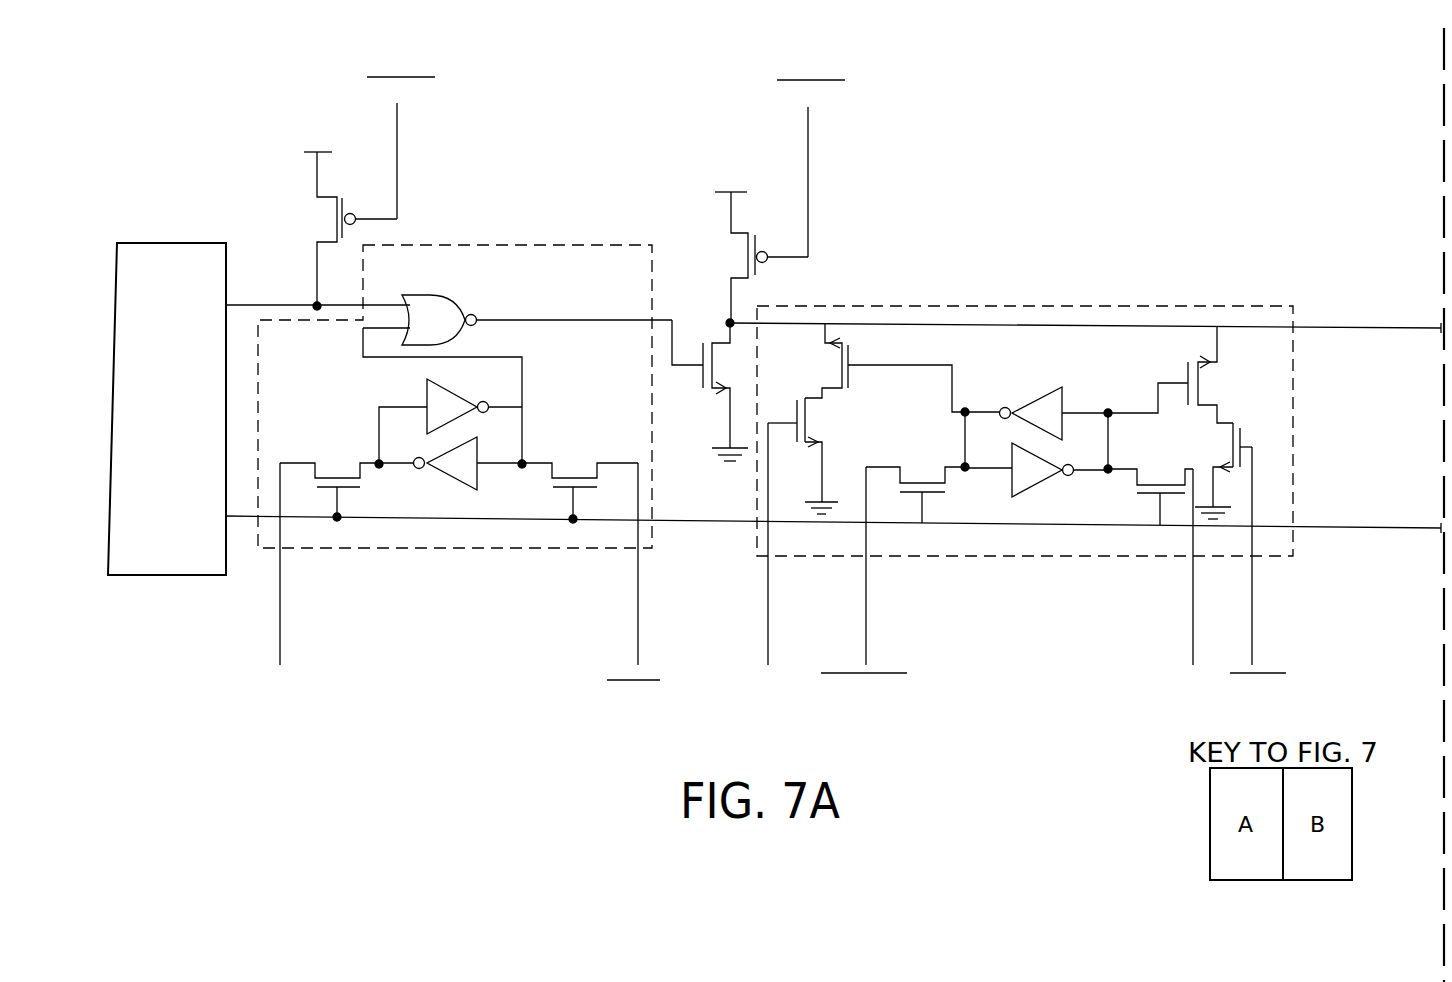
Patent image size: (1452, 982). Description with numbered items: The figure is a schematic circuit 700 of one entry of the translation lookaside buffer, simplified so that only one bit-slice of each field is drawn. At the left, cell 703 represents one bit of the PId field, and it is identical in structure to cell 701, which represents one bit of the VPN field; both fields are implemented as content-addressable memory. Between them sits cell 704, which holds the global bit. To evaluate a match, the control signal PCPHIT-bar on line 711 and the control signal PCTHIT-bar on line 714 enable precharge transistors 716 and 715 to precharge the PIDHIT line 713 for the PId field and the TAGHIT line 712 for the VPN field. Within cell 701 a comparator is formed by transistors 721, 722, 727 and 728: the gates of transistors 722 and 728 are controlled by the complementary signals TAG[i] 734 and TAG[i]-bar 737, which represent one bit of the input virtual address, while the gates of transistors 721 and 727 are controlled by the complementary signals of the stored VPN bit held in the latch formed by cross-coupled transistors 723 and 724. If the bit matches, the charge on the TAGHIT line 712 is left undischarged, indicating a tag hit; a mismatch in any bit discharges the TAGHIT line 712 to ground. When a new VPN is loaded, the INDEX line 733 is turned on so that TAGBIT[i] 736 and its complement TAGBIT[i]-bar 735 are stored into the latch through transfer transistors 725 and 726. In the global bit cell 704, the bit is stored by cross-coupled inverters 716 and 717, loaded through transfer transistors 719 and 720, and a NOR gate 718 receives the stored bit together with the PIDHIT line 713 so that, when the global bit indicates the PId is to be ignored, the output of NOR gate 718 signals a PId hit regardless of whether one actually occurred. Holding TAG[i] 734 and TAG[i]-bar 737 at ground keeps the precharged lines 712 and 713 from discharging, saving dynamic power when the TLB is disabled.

The schematic circuit 700 is at (448, 46).
The cell 701 is at (1087, 306).
The cell 703 is at (177, 243).
The cell 704 is at (540, 243).
The PCTHIT precharge signal line 711 is at (808, 147).
The TAGHIT line 712 is at (397, 142).
The PIDHIT line 713 is at (288, 305).
The GBITB complementary global bit line / precharge transistor 714 is at (347, 234).
The transistor 715 is at (757, 273).
The inverter 716 is at (477, 478).
The inverter 717 is at (427, 395).
The NOR gate 718 is at (455, 296).
The transfer transistor 719 is at (340, 478).
The transfer transistor 720 is at (587, 478).
The transistor 721 is at (850, 382).
The transistor 722 is at (807, 422).
The cross-coupled transistor 723 is at (1045, 387).
The cross-coupled transistor 724 is at (1040, 487).
The transfer transistor 725 is at (922, 483).
The transfer transistor 726 is at (1158, 474).
The transistor 727 is at (1198, 388).
The transistor 728 is at (1242, 427).
The INDEX line 733 is at (977, 526).
The TAG[i] signal 734 is at (768, 610).
The TAGBIT[i]-bar signal 735 is at (866, 610).
The TAGBIT[i] signal 736 is at (1193, 612).
The TAG[i]-bar signal 737 is at (1252, 612).